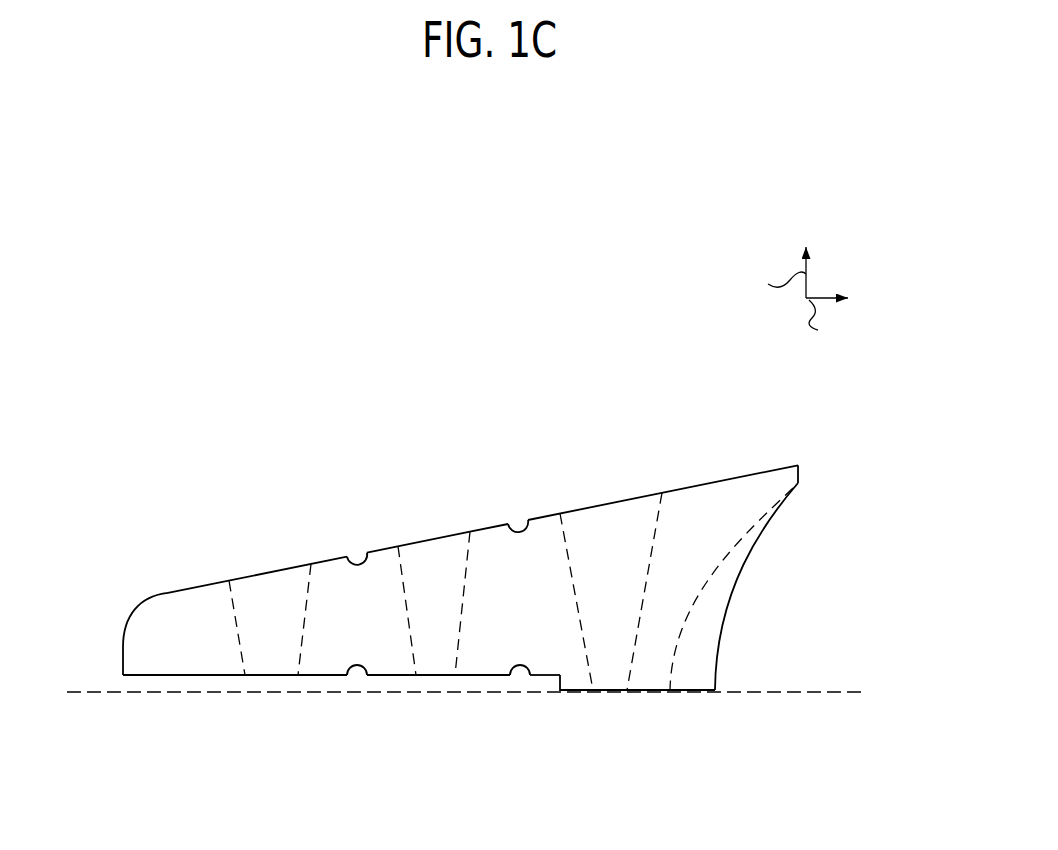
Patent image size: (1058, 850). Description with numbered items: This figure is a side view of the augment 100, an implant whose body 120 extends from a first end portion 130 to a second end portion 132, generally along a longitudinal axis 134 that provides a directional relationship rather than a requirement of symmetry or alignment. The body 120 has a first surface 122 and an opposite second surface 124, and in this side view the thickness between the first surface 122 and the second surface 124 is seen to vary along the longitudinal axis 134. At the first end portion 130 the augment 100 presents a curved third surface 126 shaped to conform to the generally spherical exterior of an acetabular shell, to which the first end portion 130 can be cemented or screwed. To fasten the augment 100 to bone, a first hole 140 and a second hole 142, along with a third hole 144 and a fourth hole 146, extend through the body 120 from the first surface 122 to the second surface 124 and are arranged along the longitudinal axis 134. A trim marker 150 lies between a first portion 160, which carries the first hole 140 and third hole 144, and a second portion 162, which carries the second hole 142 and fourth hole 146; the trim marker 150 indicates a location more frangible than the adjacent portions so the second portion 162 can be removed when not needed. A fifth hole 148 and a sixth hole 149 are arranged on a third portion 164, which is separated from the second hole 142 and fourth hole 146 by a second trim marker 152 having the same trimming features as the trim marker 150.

The augment 100 is at (195, 352).
The body 120 is at (198, 587).
The first surface 122 is at (488, 528).
The second surface 124 is at (483, 682).
The third surface 126 is at (698, 578).
The first end portion 130 is at (778, 457).
The second end portion 132 is at (140, 688).
The longitudinal axis 134 is at (833, 692).
The first hole 140 is at (611, 548).
The third hole 144 is at (612, 525).
The second hole 142 is at (434, 556).
The fourth hole 146 is at (434, 577).
The fifth hole 148 is at (272, 585).
The sixth hole 149 is at (273, 597).
The trim marker 150 is at (517, 517).
The second trim marker 152 is at (357, 545).
The first portion 160 is at (652, 672).
The second portion 162 is at (397, 663).
The third portion 164 is at (215, 663).